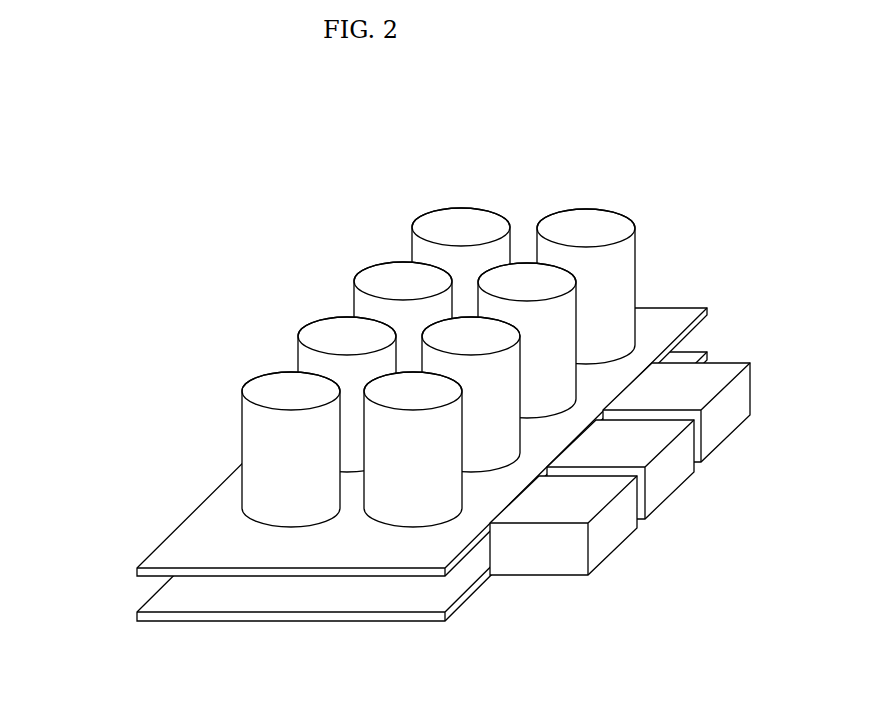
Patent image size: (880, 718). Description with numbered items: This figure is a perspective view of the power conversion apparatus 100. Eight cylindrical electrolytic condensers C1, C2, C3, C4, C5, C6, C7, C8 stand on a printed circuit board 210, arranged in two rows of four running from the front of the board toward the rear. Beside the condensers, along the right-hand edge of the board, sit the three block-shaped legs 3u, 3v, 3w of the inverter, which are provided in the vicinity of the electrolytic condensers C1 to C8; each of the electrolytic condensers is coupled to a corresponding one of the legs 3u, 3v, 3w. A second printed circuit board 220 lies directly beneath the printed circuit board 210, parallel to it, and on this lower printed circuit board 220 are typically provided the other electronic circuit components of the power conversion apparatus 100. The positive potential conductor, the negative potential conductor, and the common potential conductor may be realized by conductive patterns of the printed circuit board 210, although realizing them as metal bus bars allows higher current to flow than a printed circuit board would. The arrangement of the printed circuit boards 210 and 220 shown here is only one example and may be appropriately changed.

The power conversion apparatus 100 is at (657, 153).
The printed circuit board 210 is at (137, 572).
The printed circuit board 220 is at (148, 620).
The leg 3u is at (533, 565).
The leg 3v is at (668, 482).
The leg 3w is at (732, 420).
The electrolytic condenser C1 is at (262, 385).
The electrolytic condenser C2 is at (325, 330).
The electrolytic condenser C3 is at (388, 512).
The electrolytic condenser C4 is at (492, 458).
The electrolytic condenser C5 is at (383, 277).
The electrolytic condenser C6 is at (448, 222).
The electrolytic condenser C7 is at (522, 273).
The electrolytic condenser C8 is at (595, 220).